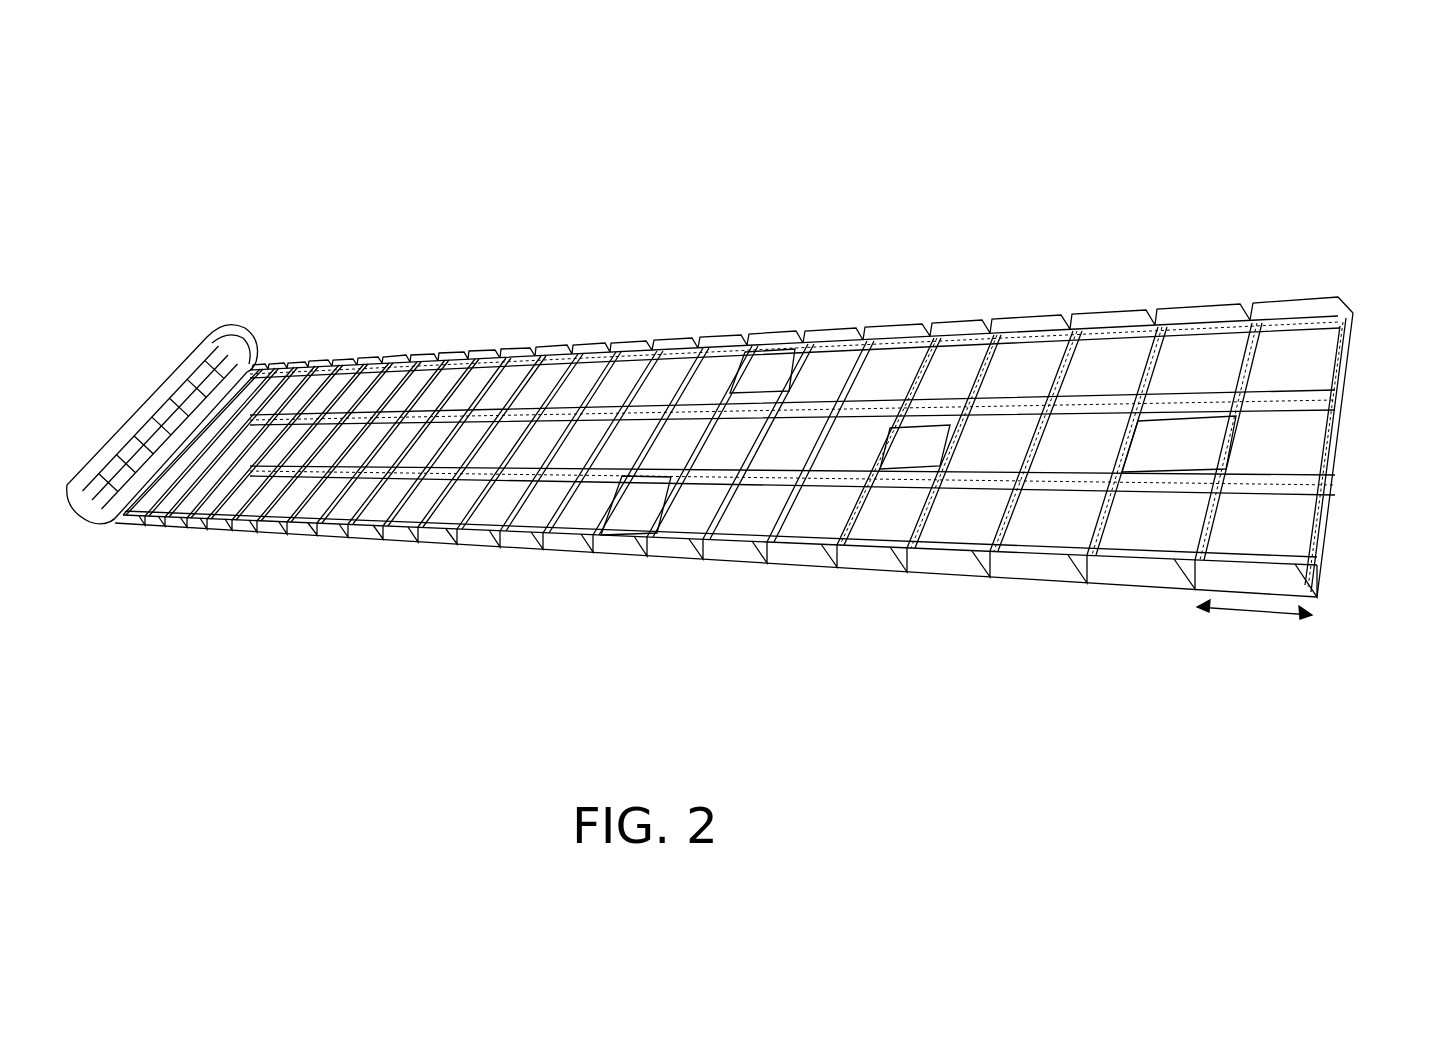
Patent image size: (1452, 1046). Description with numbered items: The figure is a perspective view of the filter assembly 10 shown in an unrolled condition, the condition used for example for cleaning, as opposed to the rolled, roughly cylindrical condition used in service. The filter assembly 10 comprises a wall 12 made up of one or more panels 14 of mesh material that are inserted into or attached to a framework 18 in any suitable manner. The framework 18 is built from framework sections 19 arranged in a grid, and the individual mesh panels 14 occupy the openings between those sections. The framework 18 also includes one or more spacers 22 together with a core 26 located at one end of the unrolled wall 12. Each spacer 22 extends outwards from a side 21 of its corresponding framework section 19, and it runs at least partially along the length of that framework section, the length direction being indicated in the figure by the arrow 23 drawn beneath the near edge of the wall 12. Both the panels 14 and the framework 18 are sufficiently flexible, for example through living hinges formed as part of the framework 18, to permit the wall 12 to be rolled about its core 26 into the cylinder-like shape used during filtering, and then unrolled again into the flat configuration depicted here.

The filter assembly 10 is at (809, 196).
The wall 12 is at (591, 336).
The panel 14 is at (745, 396).
The framework 18 is at (940, 360).
The framework section 19 is at (812, 335).
The side 21 is at (1048, 342).
The spacer 22 is at (1090, 388).
The arrow 23 is at (1238, 620).
The core 26 is at (250, 344).